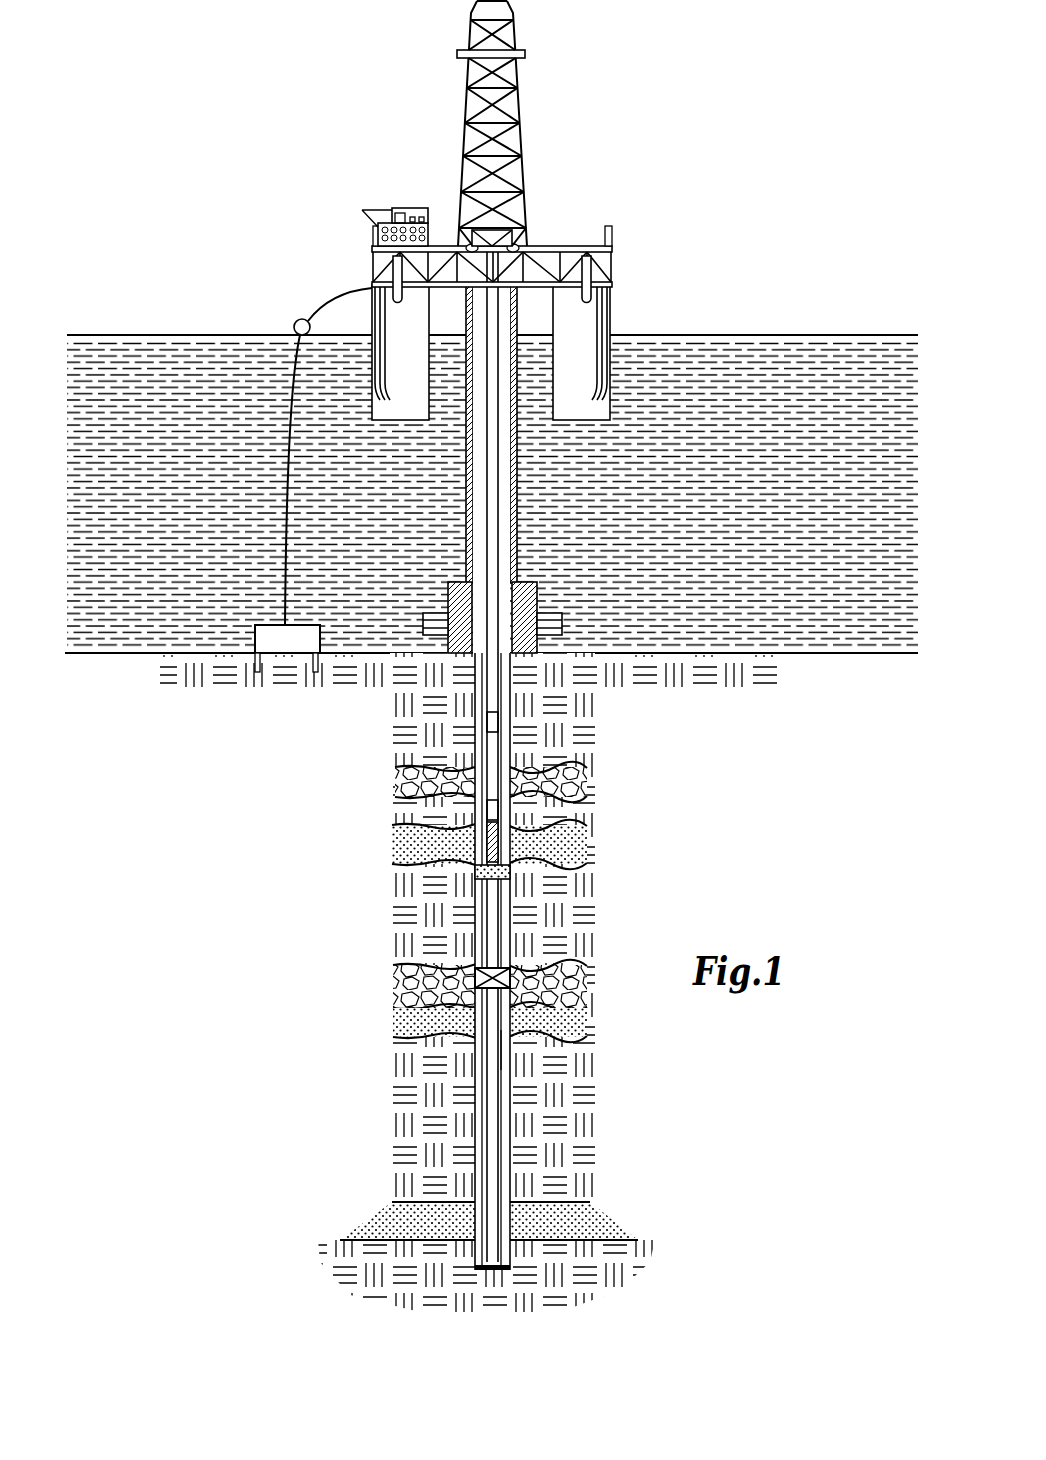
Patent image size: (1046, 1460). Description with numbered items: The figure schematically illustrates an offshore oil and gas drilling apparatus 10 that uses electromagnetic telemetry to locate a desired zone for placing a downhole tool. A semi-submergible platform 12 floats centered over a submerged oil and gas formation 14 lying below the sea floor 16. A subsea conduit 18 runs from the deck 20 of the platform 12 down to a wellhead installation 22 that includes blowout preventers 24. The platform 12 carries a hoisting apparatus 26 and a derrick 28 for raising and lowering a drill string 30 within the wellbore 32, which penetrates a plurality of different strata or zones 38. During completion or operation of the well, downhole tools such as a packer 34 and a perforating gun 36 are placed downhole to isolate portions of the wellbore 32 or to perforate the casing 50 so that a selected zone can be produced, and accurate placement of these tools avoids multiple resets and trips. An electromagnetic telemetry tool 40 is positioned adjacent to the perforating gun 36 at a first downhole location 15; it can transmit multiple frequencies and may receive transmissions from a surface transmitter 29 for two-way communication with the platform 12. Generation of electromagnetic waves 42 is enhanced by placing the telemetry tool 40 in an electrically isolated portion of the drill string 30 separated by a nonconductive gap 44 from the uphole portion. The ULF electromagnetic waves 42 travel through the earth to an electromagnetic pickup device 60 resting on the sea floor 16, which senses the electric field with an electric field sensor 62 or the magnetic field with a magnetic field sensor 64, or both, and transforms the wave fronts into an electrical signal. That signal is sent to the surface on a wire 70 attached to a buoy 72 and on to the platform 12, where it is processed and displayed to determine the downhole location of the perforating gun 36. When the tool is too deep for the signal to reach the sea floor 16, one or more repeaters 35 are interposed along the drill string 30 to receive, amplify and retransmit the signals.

The offshore oil and gas drilling apparatus 10 is at (562, 108).
The semi-submergible platform 12 is at (605, 238).
The submerged oil and gas formation 14 is at (598, 1227).
The first downhole location 15 is at (587, 848).
The sea floor 16 is at (747, 653).
The subsea conduit 18 is at (515, 520).
The deck 20 is at (612, 284).
The wellhead installation 22 is at (525, 585).
The blowout preventers 24 is at (562, 622).
The hoisting apparatus 26 is at (495, 232).
The derrick 28 is at (518, 33).
The surface transmitter 29 is at (403, 213).
The drill string 30 is at (496, 1100).
The wellbore 32 is at (477, 1167).
The packer 34 is at (470, 975).
The repeaters 35 is at (500, 722).
The perforating gun 36 is at (478, 870).
The strata or zones 38 is at (573, 783).
The electromagnetic telemetry tool 40 is at (587, 832).
The electromagnetic waves 42 is at (573, 913).
The nonconductive gap 44 is at (487, 810).
The casing 50 is at (508, 1050).
The electromagnetic pickup device 60 is at (258, 642).
The electric field sensor 62 is at (260, 672).
The magnetic field sensor 64 is at (318, 667).
The wire 70 is at (282, 548).
The buoy 72 is at (294, 325).